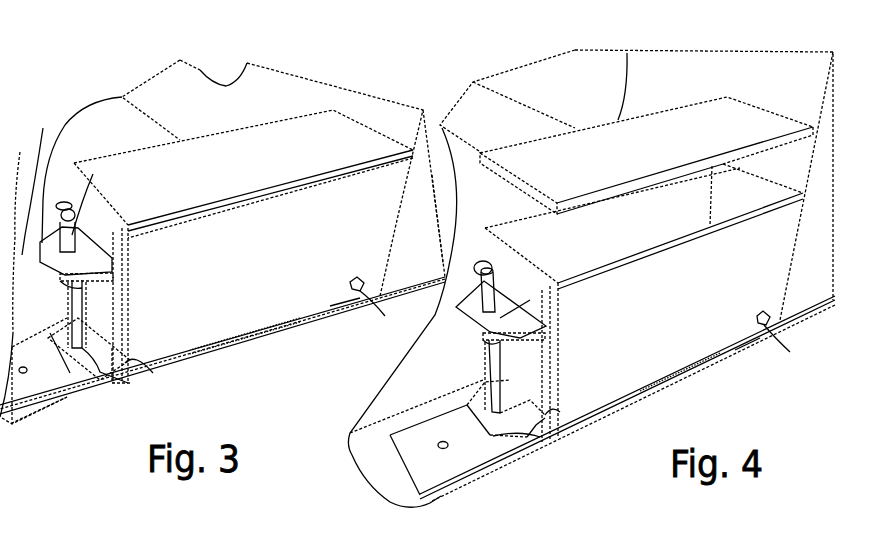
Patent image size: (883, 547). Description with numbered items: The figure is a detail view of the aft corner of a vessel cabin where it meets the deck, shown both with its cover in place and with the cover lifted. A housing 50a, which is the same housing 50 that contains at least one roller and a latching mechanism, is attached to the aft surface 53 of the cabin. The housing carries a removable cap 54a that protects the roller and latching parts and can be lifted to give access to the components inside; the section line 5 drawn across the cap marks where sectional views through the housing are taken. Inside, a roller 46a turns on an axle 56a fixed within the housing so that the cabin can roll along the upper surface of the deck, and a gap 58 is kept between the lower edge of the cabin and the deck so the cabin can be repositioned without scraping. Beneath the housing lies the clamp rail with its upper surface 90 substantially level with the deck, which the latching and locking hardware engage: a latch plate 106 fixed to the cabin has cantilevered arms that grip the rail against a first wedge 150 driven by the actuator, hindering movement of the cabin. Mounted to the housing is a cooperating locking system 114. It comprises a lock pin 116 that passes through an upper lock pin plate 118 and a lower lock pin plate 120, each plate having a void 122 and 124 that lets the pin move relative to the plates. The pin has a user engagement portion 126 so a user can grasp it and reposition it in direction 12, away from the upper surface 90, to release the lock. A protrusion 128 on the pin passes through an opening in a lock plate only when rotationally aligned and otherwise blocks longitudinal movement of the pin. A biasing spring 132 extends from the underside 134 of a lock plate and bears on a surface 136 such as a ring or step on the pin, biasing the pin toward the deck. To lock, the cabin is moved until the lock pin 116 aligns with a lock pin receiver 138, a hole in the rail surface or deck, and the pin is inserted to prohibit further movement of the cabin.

In FIG. 3, the repositioning direction of the lock pin 12 is at (260, 275).
In FIG. 3, the section line 5- 5 is at (414, 150).
In FIG. 3, the roller 46a is at (350, 310).
In FIG. 4, the roller 46a is at (747, 350).
In FIG. 4, the housing 50 is at (617, 393).
In FIG. 3, the housing 50a is at (373, 228).
In FIG. 4, the housing 50a is at (777, 257).
In FIG. 3, the aft surface 53 is at (297, 93).
In FIG. 4, the aft surface 53 is at (641, 72).
In FIG. 3, the removable cap 54a is at (272, 143).
In FIG. 4, the removable cap 54a is at (690, 123).
In FIG. 3, the axle 56a is at (382, 302).
In FIG. 4, the axle 56a is at (787, 339).
In FIG. 3, the gap 58 is at (398, 292).
In FIG. 4, the gap 58 is at (794, 321).
In FIG. 3, the upper surface of the clamp rail 90 is at (55, 380).
In FIG. 4, the upper surface of the clamp rail 90 is at (440, 427).
In FIG. 3, the latch plate 106 is at (153, 373).
In FIG. 4, the latch plate 106 is at (553, 423).
In FIG. 3, the locking system 114 is at (70, 106).
In FIG. 4, the locking system 114 is at (465, 365).
In FIG. 3, the lock pin 116 is at (70, 318).
In FIG. 4, the lock pin 116 is at (488, 385).
In FIG. 3, the upper lock pin plate 118 is at (39, 182).
In FIG. 4, the upper lock pin plate 118 is at (528, 330).
In FIG. 3, the lower lock pin plate 120 is at (85, 363).
In FIG. 4, the lower lock pin plate 120 is at (517, 433).
In FIG. 3, the void in the upper lock pin plate 122 is at (95, 270).
In FIG. 4, the void in the upper lock pin plate 122 is at (500, 317).
In FIG. 3, the void in the lower lock pin plate 124 is at (118, 386).
In FIG. 4, the void in the lower lock pin plate 124 is at (503, 412).
In FIG. 3, the user engagement portion 126 is at (58, 199).
In FIG. 4, the user engagement portion 126 is at (480, 261).
In FIG. 3, the protrusion 128 is at (96, 201).
In FIG. 3, the biasing spring 132 is at (47, 243).
In FIG. 4, the biasing spring 132 is at (497, 353).
In FIG. 3, the underside of the lock plate 134 is at (95, 290).
In FIG. 4, the underside of the lock plate 134 is at (482, 333).
In FIG. 3, the engagement surface of the lock pin 136 is at (85, 286).
In FIG. 4, the engagement surface of the lock pin 136 is at (488, 336).
In FIG. 3, the lock pin receiver 138 is at (25, 375).
In FIG. 4, the lock pin receiver 138 is at (447, 450).
In FIG. 3, the first wedge 150 is at (272, 335).
In FIG. 4, the first wedge 150 is at (698, 375).